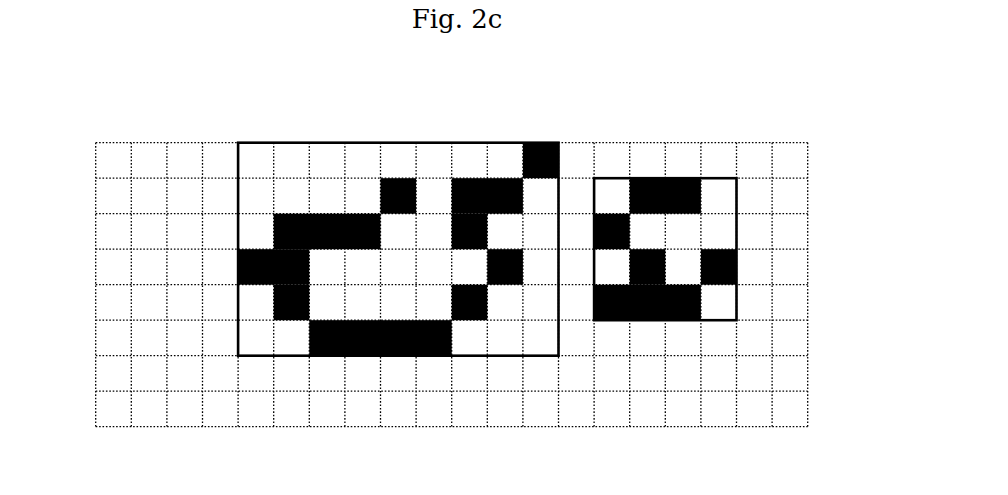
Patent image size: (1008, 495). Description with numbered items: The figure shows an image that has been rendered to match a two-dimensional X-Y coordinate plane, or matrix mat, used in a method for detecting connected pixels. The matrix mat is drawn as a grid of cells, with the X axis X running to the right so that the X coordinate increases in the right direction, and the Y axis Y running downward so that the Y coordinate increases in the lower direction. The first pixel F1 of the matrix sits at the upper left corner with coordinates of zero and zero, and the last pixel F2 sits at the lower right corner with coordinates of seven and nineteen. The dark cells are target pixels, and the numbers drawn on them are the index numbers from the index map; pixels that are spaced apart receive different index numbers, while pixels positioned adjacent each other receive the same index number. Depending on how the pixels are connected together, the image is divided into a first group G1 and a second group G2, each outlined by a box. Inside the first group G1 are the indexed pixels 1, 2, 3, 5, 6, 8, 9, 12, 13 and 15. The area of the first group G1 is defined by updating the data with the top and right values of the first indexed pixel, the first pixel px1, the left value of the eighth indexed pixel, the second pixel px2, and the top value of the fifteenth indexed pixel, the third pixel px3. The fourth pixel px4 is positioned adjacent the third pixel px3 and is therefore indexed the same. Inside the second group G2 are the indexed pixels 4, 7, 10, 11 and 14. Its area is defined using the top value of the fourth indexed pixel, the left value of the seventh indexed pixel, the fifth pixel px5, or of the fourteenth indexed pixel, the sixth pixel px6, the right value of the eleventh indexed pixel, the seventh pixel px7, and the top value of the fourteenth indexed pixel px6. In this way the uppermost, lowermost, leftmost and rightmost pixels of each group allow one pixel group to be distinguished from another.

The index number of the first indexed pixel 1 is at (541, 161).
The index number of the second indexed pixel 2 is at (399, 196).
The index number of the third indexed pixel 3 is at (487, 196).
The index number of the fourth indexed pixel 4 is at (665, 196).
The index number of the fifth indexed pixel 5 is at (327, 232).
The index number of the sixth indexed pixel 6 is at (470, 232).
The index number of the seventh indexed pixel 7 is at (612, 232).
The index number of the eighth indexed pixel 8 is at (273, 267).
The index number of the ninth indexed pixel 9 is at (505, 267).
The index number of the tenth indexed pixel 10 is at (648, 267).
The index number of the eleventh indexed pixel 11 is at (719, 267).
The index number of the twelfth indexed pixel 12 is at (292, 303).
The index number of the thirteenth indexed pixel 13 is at (470, 303).
The index number of the fourteenth indexed pixel 14 is at (647, 303).
The index number of the fifteenth indexed pixel 15 is at (380, 338).
The first pixel px1 is at (533, 142).
The second pixel px2 is at (238, 265).
The third pixel px3 is at (326, 356).
The fourth pixel px4 is at (652, 177).
The fifth pixel px5 is at (608, 210).
The sixth pixel px6 is at (645, 320).
The seventh pixel px7 is at (737, 265).
The first group G1 is at (394, 142).
The second group G2 is at (717, 178).
The first pixel F1 is at (114, 148).
The last pixel F2 is at (789, 418).
The matrix mat is at (808, 230).
The X-axis X is at (160, 455).
The Y-axis Y is at (73, 120).